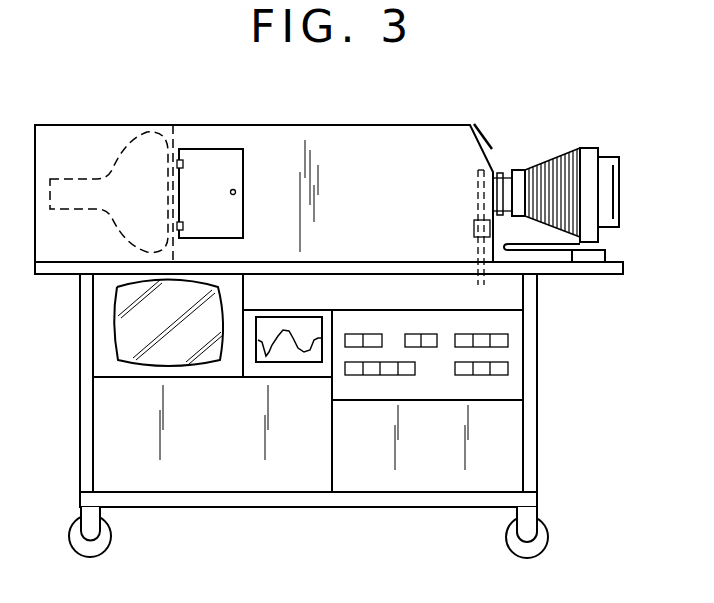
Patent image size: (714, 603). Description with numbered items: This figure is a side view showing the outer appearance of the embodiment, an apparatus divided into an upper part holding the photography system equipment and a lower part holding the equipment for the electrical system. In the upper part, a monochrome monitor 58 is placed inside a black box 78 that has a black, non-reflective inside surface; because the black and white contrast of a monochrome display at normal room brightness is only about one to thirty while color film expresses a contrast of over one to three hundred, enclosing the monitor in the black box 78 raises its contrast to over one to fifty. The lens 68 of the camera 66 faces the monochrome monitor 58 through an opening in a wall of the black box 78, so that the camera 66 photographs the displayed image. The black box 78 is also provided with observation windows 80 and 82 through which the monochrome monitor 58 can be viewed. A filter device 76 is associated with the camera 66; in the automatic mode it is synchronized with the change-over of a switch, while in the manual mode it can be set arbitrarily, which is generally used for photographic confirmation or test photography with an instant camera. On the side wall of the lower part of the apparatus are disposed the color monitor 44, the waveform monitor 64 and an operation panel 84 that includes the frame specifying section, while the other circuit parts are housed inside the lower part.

The color monitor 44 is at (176, 355).
The monochrome monitor 58 is at (147, 130).
The waveform monitor 64 is at (290, 357).
The camera 66 is at (549, 150).
The lens 68 is at (493, 172).
The filter device 76 is at (478, 252).
The black box 78 is at (397, 138).
The observation window 80 is at (478, 130).
The observation window 82 is at (238, 207).
The operation panel 84 is at (512, 299).